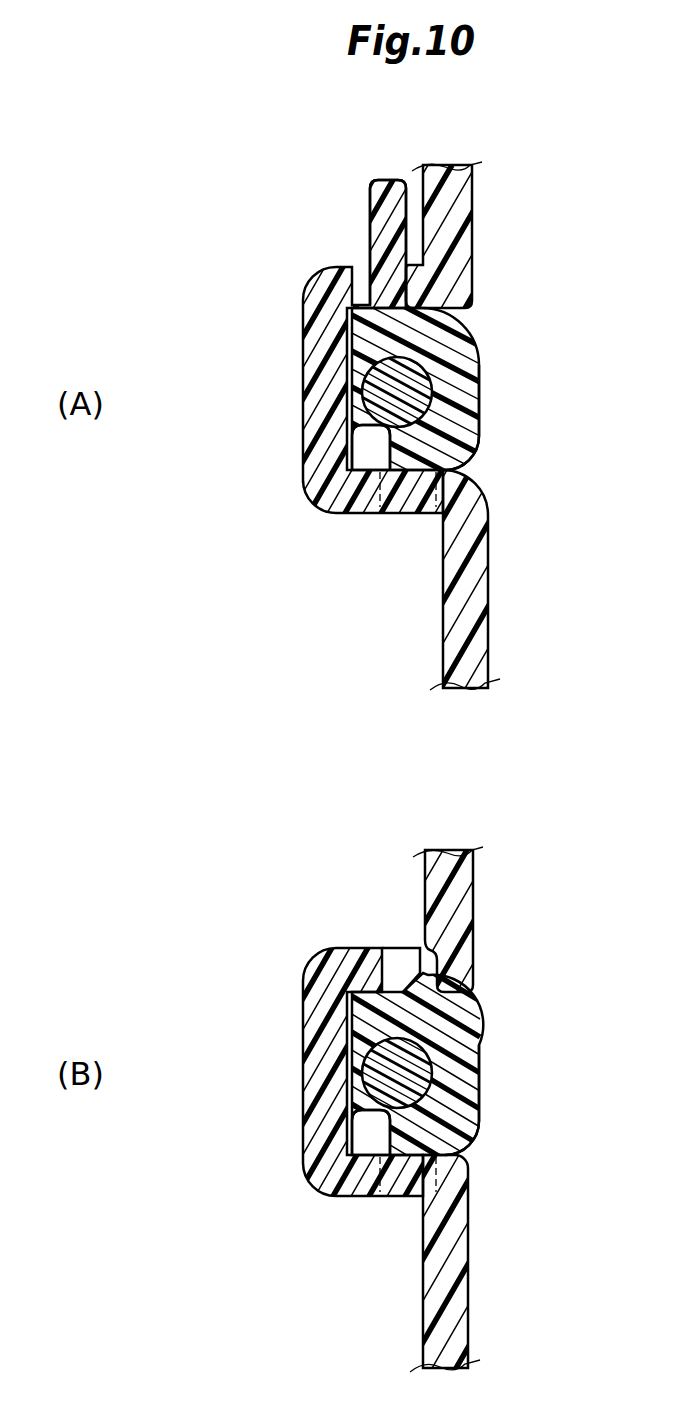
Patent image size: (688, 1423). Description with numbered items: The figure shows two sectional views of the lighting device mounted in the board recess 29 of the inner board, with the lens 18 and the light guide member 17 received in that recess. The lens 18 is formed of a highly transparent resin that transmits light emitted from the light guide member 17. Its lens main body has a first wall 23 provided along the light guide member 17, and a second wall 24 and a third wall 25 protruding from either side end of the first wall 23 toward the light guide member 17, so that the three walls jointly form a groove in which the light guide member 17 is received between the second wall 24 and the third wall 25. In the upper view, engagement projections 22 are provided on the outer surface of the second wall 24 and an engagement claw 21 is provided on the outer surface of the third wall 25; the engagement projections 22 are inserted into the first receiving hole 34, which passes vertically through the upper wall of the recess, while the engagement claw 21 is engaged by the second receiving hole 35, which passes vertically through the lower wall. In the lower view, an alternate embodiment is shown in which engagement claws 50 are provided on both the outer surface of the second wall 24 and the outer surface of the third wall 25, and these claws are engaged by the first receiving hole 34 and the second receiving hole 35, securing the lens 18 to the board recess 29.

The light guide member 17 is at (385, 388).
The lens 18 is at (453, 383).
The engagement claw 21 is at (385, 470).
The engagement projection 22 is at (390, 193).
The first wall 23 is at (455, 413).
The second wall 24 is at (413, 323).
The third wall 25 is at (345, 455).
The board recess 29 is at (478, 319).
The first receiving hole 34 is at (392, 260).
The second receiving hole 35 is at (403, 522).
The engagement claw 50 is at (400, 973).